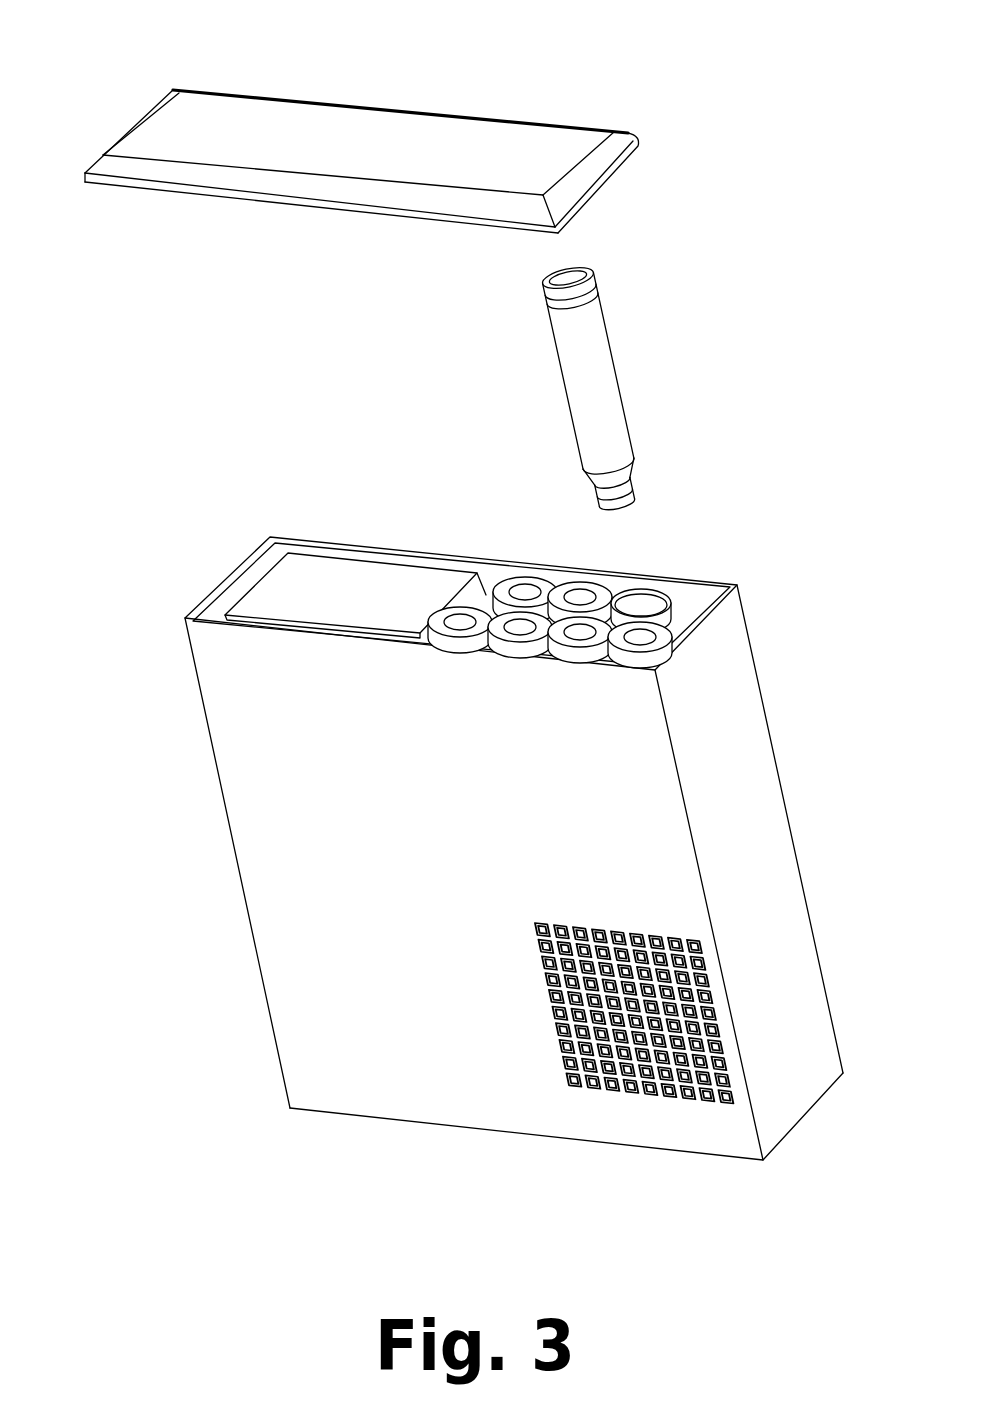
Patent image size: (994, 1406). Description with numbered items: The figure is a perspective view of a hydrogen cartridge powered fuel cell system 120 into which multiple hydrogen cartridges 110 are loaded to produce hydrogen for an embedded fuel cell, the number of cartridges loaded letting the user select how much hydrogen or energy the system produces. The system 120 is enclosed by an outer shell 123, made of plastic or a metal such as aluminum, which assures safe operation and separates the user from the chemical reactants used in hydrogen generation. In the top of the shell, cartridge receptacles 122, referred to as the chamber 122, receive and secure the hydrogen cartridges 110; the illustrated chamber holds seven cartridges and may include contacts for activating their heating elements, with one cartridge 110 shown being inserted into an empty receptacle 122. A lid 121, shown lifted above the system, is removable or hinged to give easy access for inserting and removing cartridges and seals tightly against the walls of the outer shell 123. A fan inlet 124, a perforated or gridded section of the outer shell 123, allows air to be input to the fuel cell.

The hydrogen cartridge powered fuel cell system 120 is at (815, 155).
The lid 121 is at (273, 160).
The hydrogen cartridge 110 is at (540, 466).
The cartridge receptacle 122 is at (669, 595).
The outer shell 123 is at (225, 636).
The fan inlet 124 is at (547, 998).